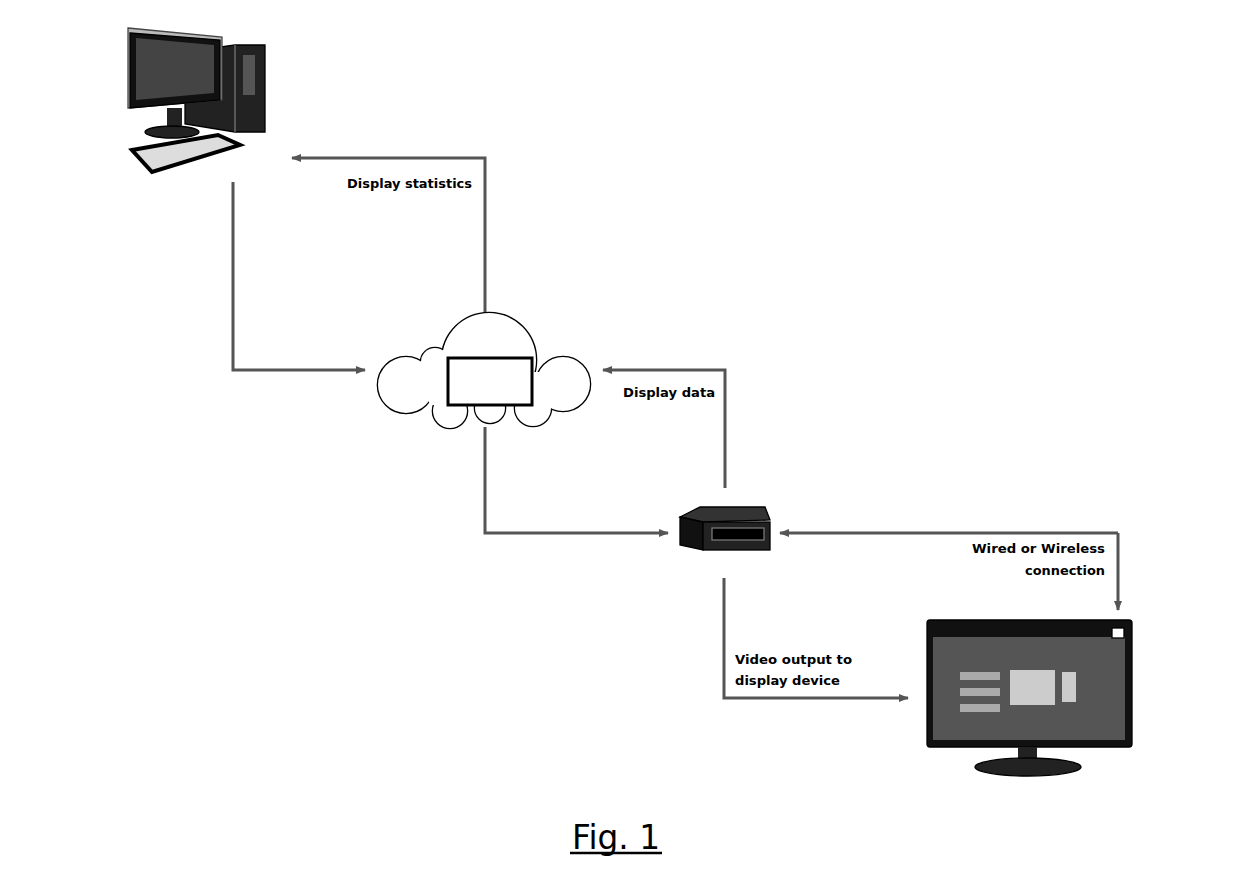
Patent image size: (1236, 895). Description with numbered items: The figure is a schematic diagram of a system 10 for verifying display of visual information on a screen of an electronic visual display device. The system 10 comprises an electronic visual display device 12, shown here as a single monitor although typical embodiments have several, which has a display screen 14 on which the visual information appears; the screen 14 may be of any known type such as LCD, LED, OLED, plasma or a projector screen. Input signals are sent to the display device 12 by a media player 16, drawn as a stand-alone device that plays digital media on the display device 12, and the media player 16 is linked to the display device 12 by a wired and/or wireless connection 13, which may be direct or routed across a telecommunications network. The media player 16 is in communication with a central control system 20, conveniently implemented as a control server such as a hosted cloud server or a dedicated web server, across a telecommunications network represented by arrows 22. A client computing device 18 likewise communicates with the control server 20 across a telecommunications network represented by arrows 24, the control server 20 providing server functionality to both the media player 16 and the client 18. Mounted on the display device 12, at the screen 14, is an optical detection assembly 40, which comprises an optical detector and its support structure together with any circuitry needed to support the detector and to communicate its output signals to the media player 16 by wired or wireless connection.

The system 10 is at (739, 190).
The electronic visual display device 12 is at (1133, 673).
The wired and/or wireless connection 13 is at (873, 700).
The display screen 14 is at (1110, 700).
The media player 16 is at (755, 510).
The client computing device 18 is at (138, 110).
The central control system 20 is at (484, 370).
The arrows representing telecommunications network 22 is at (718, 442).
The arrows representing telecommunications network 24 is at (485, 248).
The optical detection assembly 40 is at (1127, 620).